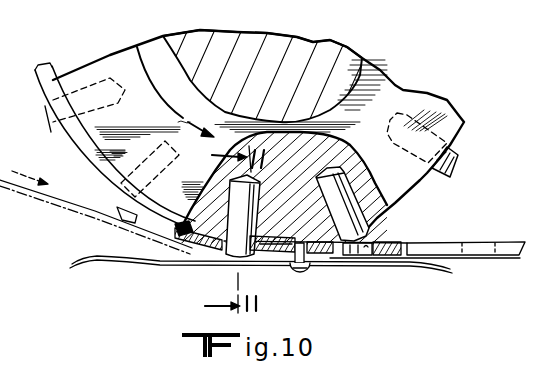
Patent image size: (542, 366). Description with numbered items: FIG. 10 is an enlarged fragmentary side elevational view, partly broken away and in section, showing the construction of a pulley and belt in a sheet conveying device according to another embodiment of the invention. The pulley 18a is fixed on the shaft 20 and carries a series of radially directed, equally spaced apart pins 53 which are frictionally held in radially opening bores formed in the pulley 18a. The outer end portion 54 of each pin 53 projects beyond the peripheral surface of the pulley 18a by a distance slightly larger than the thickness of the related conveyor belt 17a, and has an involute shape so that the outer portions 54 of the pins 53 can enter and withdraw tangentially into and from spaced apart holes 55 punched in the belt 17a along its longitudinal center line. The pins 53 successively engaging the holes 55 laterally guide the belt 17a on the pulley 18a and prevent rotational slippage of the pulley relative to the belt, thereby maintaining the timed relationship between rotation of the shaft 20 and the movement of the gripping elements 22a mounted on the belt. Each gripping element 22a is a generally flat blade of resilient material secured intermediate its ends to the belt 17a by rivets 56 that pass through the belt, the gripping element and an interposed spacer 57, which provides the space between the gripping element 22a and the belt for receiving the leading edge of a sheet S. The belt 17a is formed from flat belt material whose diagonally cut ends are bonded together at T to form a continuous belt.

The shaft 20 is at (307, 45).
The pulley 18a is at (398, 92).
The outer end portion of pin 54 is at (456, 152).
The pin 53 is at (372, 226).
The conveyor belt 17a is at (431, 252).
The hole 55 is at (365, 248).
The rivet 56 is at (299, 270).
The spacer 57 is at (283, 262).
The gripping element 22a is at (191, 272).
The bonded joint of belt ends T is at (74, 156).
The sheet S is at (68, 209).